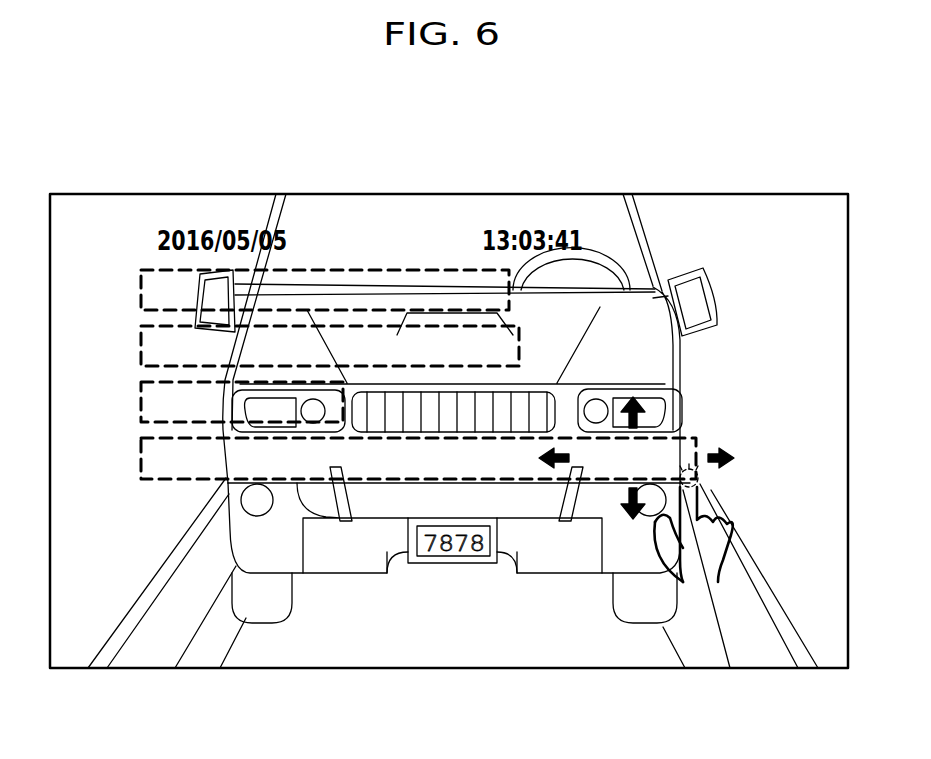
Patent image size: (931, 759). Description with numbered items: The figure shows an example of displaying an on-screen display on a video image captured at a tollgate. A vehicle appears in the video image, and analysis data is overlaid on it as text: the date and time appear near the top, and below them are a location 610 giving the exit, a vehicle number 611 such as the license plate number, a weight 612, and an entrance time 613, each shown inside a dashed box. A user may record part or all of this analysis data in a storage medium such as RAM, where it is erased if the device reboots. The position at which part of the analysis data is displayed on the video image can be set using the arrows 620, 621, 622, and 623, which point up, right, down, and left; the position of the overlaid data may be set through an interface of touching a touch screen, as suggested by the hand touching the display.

The location 610 is at (141, 290).
The vehicle number 611 is at (141, 346).
The weight 612 is at (141, 402).
The entrance time 613 is at (141, 459).
The arrow 620 is at (637, 399).
The arrow 621 is at (735, 459).
The arrow 622 is at (626, 500).
The arrow 623 is at (546, 468).